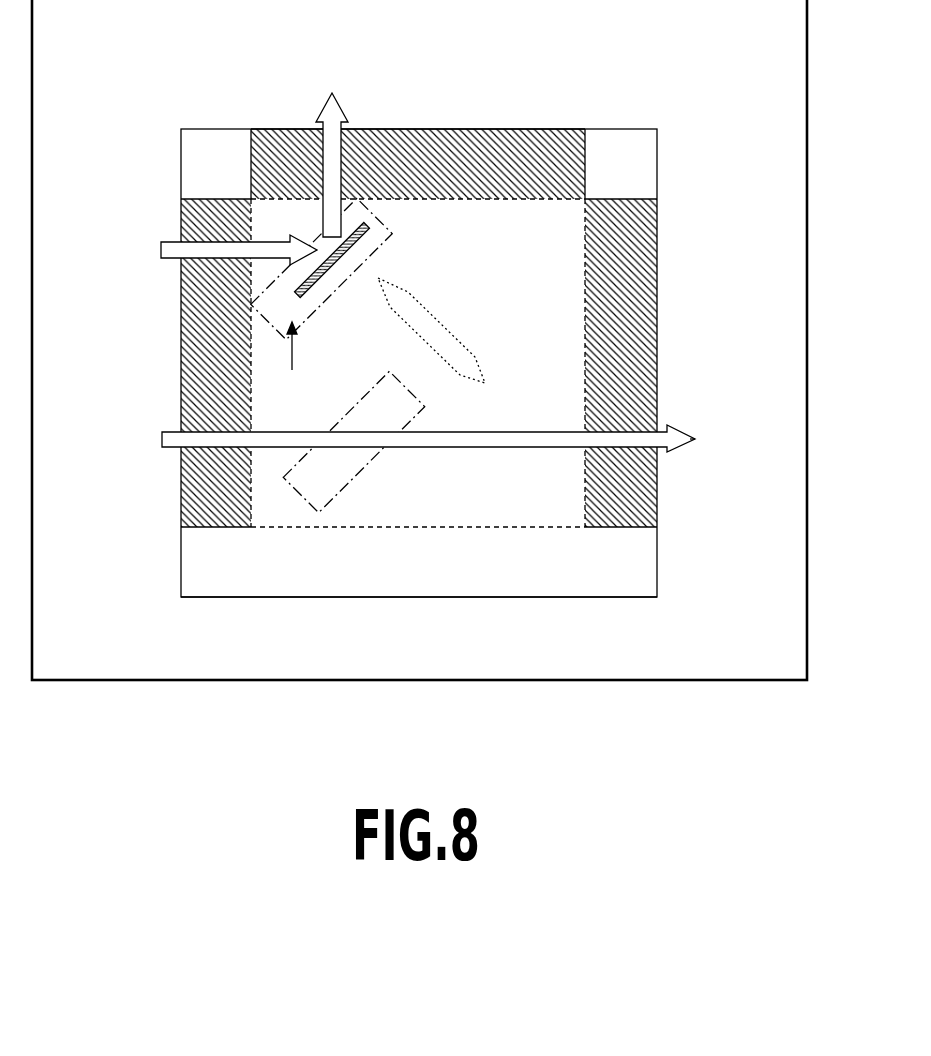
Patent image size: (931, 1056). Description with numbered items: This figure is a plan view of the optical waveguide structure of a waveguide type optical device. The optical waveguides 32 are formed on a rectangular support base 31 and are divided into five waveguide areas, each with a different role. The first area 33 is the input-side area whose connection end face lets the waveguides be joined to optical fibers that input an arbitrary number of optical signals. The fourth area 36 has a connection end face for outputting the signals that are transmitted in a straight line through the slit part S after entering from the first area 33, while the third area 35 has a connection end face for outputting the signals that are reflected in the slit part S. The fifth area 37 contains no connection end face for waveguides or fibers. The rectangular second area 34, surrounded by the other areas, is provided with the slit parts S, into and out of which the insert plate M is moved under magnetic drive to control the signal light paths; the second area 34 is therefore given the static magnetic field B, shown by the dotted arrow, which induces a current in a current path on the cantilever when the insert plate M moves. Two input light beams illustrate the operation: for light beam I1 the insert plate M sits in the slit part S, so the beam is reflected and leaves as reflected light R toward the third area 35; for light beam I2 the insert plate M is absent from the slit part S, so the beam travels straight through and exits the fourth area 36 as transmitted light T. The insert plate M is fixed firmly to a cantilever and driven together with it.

The support base 31 is at (808, 533).
The optical waveguides 32 is at (433, 369).
The Area 1 33 is at (181, 480).
The Area 2 34 is at (382, 503).
The Area 3 35 is at (408, 129).
The Area 4 36 is at (619, 517).
The Area 5 37 is at (255, 583).
The insert plate M is at (315, 287).
The slit part S is at (347, 415).
The reflected light R is at (332, 153).
The transmitted light T is at (701, 439).
The static magnetic field B is at (431, 330).
The light beam I1 is at (226, 250).
The light beam I2 is at (416, 439).